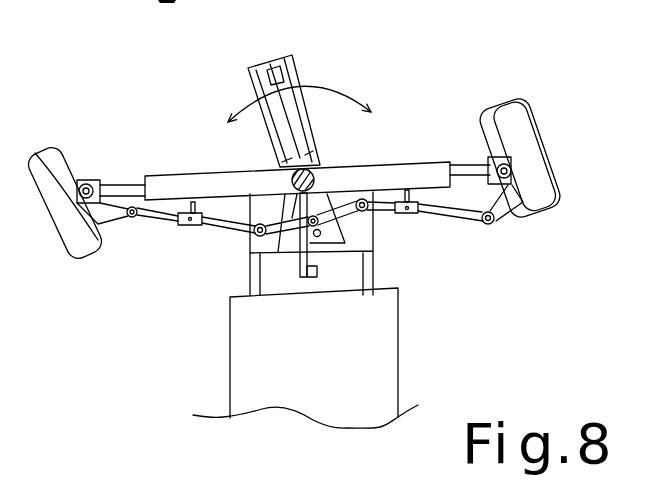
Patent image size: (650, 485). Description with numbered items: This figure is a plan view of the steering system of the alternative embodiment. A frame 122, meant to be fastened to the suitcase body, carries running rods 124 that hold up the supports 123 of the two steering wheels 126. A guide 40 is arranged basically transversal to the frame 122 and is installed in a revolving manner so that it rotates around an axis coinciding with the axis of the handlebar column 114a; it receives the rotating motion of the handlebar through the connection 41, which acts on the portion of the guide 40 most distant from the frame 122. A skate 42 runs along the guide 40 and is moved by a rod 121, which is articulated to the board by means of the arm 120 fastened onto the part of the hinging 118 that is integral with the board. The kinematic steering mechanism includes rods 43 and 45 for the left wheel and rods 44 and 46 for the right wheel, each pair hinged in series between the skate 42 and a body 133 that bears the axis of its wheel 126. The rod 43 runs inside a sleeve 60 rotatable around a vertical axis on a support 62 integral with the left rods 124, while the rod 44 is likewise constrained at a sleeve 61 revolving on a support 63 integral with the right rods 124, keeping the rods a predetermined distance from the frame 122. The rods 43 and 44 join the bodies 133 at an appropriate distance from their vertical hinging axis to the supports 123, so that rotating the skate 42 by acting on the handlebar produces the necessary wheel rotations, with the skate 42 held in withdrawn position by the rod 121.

The guide 40 is at (298, 66).
The connection 41 is at (278, 70).
The skate 42 is at (371, 106).
The rod 43 is at (157, 216).
The rod 44 is at (477, 214).
The rod 45 is at (250, 238).
The rod 46 is at (338, 198).
The sleeve 60 is at (195, 226).
The sleeve 61 is at (415, 213).
The support 62 is at (200, 203).
The support 63 is at (417, 165).
The column of the handlebar 114a is at (317, 163).
The hinging 118 is at (368, 327).
The arm 120 is at (312, 278).
The rod 121 is at (282, 265).
The frame 122 is at (172, 176).
The supports 123 is at (88, 178).
The rods 124 is at (118, 185).
The steering wheels 126 is at (38, 151).
The body 133 is at (100, 240).